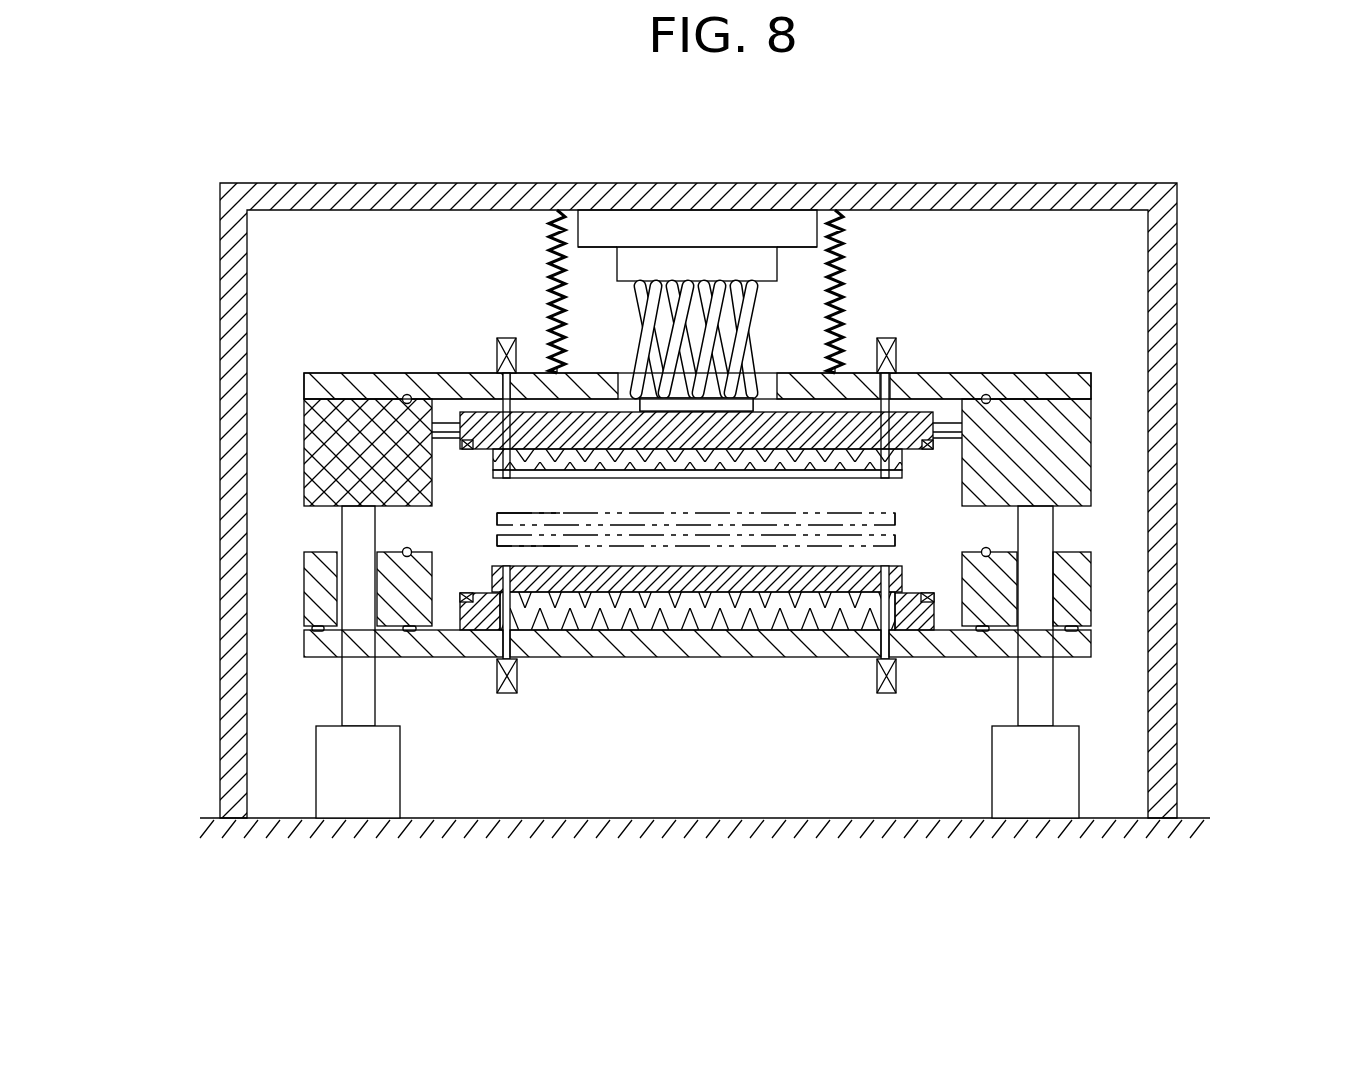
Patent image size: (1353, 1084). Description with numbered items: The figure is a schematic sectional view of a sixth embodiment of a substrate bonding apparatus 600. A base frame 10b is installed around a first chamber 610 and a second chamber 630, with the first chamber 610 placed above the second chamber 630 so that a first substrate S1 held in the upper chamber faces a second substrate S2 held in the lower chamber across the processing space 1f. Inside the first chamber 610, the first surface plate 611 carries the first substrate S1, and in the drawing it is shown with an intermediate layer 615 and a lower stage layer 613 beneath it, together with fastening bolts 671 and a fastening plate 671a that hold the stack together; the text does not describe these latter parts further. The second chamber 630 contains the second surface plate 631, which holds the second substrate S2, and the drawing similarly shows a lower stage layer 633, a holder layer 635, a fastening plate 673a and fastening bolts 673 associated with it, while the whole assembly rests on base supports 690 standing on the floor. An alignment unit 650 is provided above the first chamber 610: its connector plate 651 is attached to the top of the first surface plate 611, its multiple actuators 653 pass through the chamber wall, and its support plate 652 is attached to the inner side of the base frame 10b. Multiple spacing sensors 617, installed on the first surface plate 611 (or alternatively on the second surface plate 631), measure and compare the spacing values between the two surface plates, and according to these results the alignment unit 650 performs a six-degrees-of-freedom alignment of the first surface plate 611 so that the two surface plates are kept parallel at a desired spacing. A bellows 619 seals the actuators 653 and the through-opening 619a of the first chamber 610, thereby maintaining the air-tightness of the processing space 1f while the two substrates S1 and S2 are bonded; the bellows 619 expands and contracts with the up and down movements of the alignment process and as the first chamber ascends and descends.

The substrate bonding apparatus 600 is at (730, 139).
The base frame 10b is at (1178, 280).
The bellows 619 is at (546, 242).
The through-opening 619a is at (629, 391).
The support plate 652 is at (765, 268).
The actuators 653 is at (758, 316).
The connector plate 651 is at (757, 397).
The alignment unit 650 is at (929, 249).
The first chamber 610 is at (1097, 437).
The upper fastening bolt 671 is at (497, 352).
The upper fastening plate 671a is at (497, 435).
The spacing sensors 617 is at (432, 440).
The upper holder 615 is at (490, 460).
The first surface plate 611 is at (432, 433).
The upper stage 613 is at (490, 473).
The processing space 1f is at (920, 514).
The first substrate S1 is at (882, 514).
The second substrate S2 is at (882, 542).
The lower stage 633 is at (497, 578).
The lower fastening plate 673a is at (495, 593).
The lower holder 635 is at (490, 580).
The lower fastening bolt 673 is at (497, 672).
The second chamber 630 is at (1097, 598).
The second surface plate 631 is at (473, 613).
The base support 690 is at (314, 752).